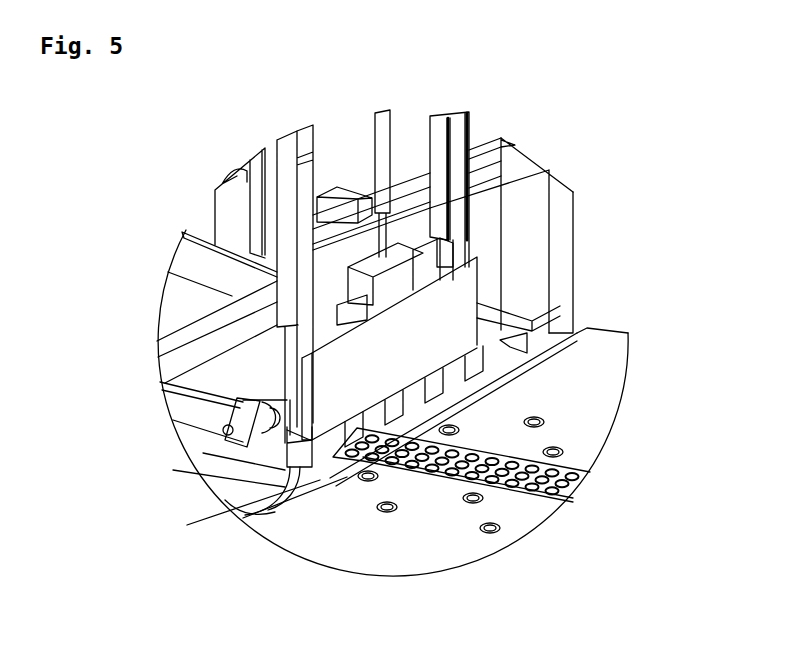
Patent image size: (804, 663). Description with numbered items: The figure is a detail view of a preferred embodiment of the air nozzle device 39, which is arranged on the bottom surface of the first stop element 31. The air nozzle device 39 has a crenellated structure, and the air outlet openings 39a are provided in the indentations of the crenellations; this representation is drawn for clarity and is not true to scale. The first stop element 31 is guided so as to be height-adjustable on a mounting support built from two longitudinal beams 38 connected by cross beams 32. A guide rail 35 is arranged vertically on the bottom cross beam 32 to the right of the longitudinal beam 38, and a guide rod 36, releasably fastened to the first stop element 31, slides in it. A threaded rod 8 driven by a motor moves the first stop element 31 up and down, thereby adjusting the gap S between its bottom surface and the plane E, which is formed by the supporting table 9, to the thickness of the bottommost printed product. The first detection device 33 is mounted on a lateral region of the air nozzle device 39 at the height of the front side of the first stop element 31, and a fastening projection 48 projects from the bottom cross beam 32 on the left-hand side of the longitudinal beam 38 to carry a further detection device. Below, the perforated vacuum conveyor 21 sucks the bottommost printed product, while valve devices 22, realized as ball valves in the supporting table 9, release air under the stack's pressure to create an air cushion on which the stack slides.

The supporting table 9 is at (323, 566).
The guide rail 35 is at (311, 140).
The fastening projection 48 is at (337, 207).
The threaded rod 8 is at (385, 122).
The guide rod 36 is at (455, 135).
The cross beam 32 is at (524, 164).
The longitudinal beam 38 is at (560, 200).
The first stop element 31 is at (460, 290).
The first detection device 33 is at (508, 345).
The air outlet openings 39a is at (467, 397).
The plane E is at (627, 355).
The vacuum conveyor 21 is at (592, 470).
The valve device 22 is at (495, 530).
The air nozzle device 39 is at (323, 480).
The gap S is at (250, 494).